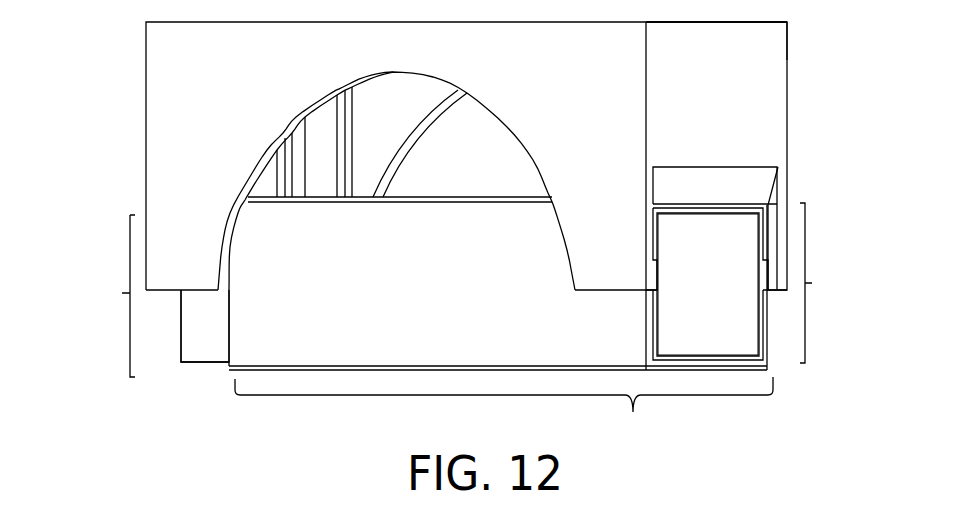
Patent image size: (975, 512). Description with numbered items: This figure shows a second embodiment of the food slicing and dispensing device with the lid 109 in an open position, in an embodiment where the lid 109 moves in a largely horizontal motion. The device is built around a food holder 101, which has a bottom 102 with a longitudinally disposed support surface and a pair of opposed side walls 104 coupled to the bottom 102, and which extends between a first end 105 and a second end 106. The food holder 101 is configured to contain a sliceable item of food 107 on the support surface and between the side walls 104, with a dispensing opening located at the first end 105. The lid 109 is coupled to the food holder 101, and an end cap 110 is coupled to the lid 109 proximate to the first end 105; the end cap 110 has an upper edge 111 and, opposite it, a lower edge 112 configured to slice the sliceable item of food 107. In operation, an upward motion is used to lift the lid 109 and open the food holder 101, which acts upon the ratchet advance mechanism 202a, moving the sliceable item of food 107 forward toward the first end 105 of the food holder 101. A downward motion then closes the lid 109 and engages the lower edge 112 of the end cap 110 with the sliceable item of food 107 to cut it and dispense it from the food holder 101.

The lid 109 is at (173, 77).
The upper edge 111 is at (762, 53).
The end cap 110 is at (723, 115).
The lower edge 112 is at (748, 189).
The first end 105 is at (759, 286).
The sliceable item of food 107 is at (710, 278).
The second end 106 is at (147, 296).
The ratchet advance mechanism 202a is at (183, 340).
The side walls 104 is at (258, 352).
The bottom 102 is at (336, 366).
The food holder 101 is at (504, 410).